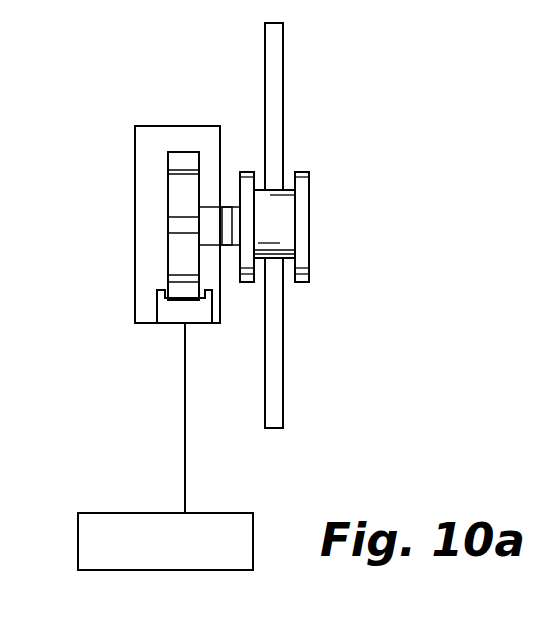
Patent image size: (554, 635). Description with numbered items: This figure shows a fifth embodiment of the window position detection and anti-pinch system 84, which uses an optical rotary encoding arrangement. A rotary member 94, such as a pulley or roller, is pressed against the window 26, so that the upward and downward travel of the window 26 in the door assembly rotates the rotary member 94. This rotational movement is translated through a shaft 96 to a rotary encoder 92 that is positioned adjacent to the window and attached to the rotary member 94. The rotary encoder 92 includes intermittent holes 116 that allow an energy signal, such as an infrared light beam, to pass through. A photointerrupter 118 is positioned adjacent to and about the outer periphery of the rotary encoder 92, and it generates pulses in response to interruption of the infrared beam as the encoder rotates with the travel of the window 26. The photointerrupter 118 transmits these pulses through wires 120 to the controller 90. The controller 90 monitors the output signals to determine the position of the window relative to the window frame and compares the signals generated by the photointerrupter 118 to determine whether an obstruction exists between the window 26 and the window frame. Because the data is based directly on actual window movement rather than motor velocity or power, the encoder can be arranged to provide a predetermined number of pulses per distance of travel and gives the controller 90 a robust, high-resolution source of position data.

The window 26 is at (275, 48).
The window position detection system 84 is at (343, 372).
The controller 90 is at (215, 571).
The rotary encoder 92 is at (168, 193).
The rotary member 94 is at (308, 170).
The shaft 96 is at (232, 205).
The intermittent holes 116 is at (168, 172).
The photointerrupter 118 is at (157, 305).
The wires 120 is at (183, 386).